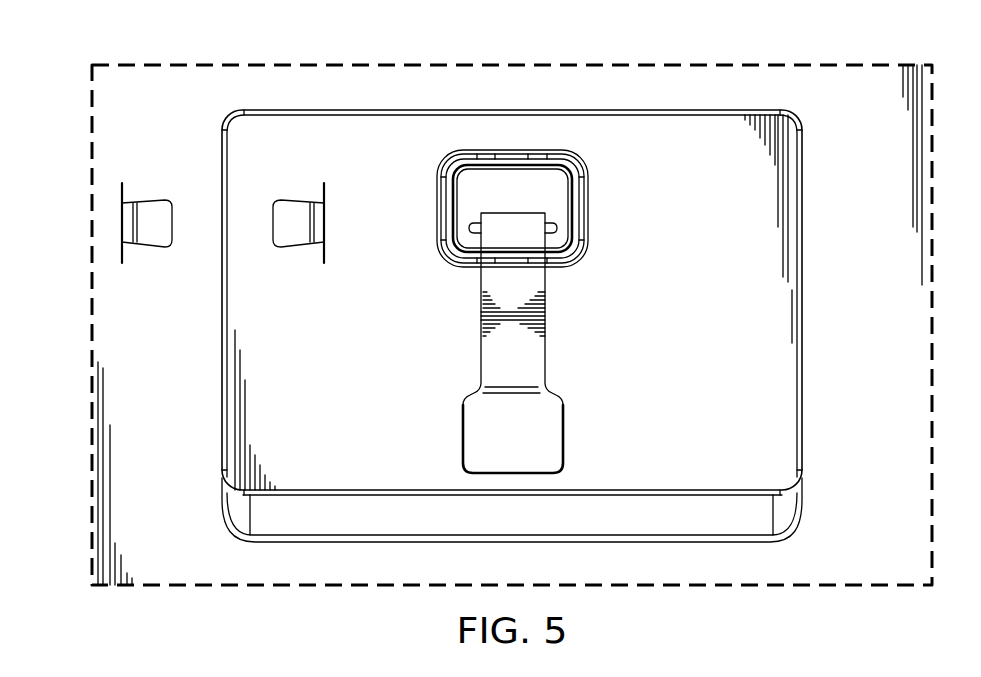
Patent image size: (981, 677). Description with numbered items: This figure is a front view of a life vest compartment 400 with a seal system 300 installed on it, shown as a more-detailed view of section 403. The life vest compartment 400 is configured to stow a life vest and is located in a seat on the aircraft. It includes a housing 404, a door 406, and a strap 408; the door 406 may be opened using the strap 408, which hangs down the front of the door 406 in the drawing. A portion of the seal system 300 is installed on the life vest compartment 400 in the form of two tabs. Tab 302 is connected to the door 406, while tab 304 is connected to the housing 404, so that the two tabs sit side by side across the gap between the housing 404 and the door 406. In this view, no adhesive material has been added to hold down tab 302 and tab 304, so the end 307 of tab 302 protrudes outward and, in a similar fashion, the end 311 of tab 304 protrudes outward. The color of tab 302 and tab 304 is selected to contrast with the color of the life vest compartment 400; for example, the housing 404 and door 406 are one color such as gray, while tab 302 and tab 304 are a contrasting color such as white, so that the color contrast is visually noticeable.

The seal system 300 is at (191, 138).
The tab 302 is at (300, 193).
The tab 304 is at (150, 193).
The end of tab 307 is at (272, 230).
The end of tab 311 is at (173, 230).
The life vest compartment 400 is at (241, 84).
The section 403 is at (609, 60).
The housing 404 is at (116, 295).
The door 406 is at (793, 343).
The strap 408 is at (552, 435).